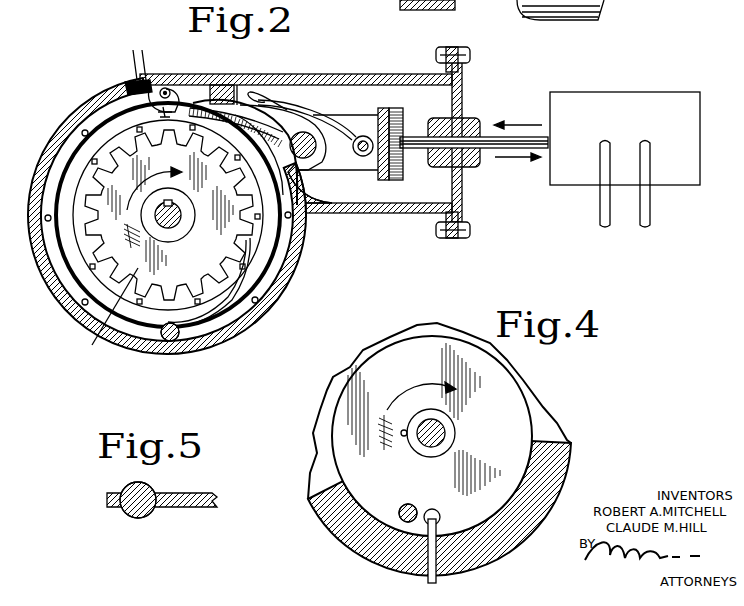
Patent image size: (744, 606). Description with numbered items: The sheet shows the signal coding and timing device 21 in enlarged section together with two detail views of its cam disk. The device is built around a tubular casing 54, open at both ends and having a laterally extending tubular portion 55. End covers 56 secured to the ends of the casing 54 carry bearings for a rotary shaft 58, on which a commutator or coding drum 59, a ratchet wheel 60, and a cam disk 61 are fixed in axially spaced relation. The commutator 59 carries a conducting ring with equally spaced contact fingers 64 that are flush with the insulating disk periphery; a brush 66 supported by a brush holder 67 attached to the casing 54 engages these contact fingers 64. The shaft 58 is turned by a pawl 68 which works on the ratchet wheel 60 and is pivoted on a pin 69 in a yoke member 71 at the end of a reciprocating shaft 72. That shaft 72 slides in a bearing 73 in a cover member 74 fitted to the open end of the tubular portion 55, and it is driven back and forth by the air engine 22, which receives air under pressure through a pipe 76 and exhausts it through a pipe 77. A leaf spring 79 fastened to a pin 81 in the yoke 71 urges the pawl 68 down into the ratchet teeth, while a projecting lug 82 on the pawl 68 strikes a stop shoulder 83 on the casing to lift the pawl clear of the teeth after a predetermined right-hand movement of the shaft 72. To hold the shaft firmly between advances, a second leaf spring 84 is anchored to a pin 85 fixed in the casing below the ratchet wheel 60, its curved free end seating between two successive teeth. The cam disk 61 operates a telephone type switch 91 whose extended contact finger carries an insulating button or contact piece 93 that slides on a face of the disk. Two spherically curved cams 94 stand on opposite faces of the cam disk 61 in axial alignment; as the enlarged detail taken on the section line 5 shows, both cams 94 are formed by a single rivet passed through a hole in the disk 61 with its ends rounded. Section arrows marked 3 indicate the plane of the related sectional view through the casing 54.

In FIG. 2, the signal coding and timing device 21 is at (114, 80).
In FIG. 2, the air engine 22 is at (628, 88).
In FIG. 4, the tubular casing 54 is at (493, 553).
In FIG. 2, the laterally extending tubular portion 55 is at (375, 75).
In FIG. 2, the end covers 56 is at (72, 292).
In FIG. 2, the rotary shaft 58 is at (178, 233).
In FIG. 4, the rotary shaft 58 is at (447, 433).
In FIG. 2, the commutator or coding drum 59 is at (57, 145).
In FIG. 2, the ratchet wheel 60 is at (106, 316).
In FIG. 4, the cam disk 61 is at (357, 403).
In FIG. 5, the cam disk 61 is at (180, 508).
In FIG. 2, the contact fingers 64 is at (77, 284).
In FIG. 2, the brush 66 is at (157, 113).
In FIG. 2, the brush holder 67 is at (200, 88).
In FIG. 2, the pawl 68 is at (253, 96).
In FIG. 2, the pin 69 is at (308, 158).
In FIG. 2, the yoke member 71 is at (390, 102).
In FIG. 2, the reciprocating shaft 72 is at (417, 143).
In FIG. 2, the bearing 73 is at (465, 118).
In FIG. 2, the cover member 74 is at (463, 87).
In FIG. 2, the pipe 76 is at (648, 205).
In FIG. 2, the pipe 77 is at (603, 207).
In FIG. 2, the leaf spring 79 is at (312, 113).
In FIG. 2, the pin 81 is at (363, 157).
In FIG. 2, the projecting lug 82 is at (310, 216).
In FIG. 2, the stop shoulder 83 is at (333, 213).
In FIG. 2, the leaf spring 84 is at (243, 323).
In FIG. 2, the pin 85 is at (155, 352).
In FIG. 4, the telephone type switch 91 is at (450, 537).
In FIG. 4, the button or contact piece 93 is at (436, 511).
In FIG. 4, the spherically curved cams 94 is at (399, 510).
In FIG. 5, the spherically curved cams 94 is at (127, 490).
In FIG. 2, the section line 3- 3 is at (165, 83).
In FIG. 4, the section line 5- 5 is at (389, 537).